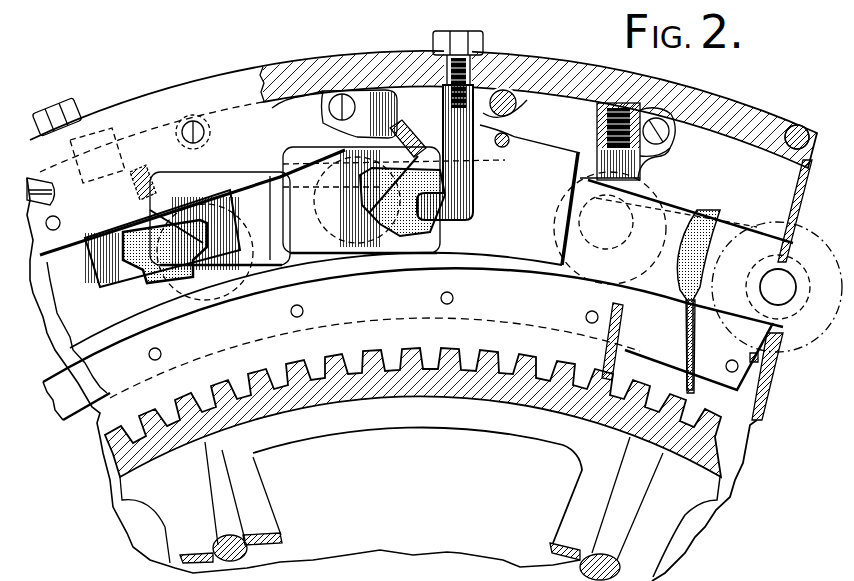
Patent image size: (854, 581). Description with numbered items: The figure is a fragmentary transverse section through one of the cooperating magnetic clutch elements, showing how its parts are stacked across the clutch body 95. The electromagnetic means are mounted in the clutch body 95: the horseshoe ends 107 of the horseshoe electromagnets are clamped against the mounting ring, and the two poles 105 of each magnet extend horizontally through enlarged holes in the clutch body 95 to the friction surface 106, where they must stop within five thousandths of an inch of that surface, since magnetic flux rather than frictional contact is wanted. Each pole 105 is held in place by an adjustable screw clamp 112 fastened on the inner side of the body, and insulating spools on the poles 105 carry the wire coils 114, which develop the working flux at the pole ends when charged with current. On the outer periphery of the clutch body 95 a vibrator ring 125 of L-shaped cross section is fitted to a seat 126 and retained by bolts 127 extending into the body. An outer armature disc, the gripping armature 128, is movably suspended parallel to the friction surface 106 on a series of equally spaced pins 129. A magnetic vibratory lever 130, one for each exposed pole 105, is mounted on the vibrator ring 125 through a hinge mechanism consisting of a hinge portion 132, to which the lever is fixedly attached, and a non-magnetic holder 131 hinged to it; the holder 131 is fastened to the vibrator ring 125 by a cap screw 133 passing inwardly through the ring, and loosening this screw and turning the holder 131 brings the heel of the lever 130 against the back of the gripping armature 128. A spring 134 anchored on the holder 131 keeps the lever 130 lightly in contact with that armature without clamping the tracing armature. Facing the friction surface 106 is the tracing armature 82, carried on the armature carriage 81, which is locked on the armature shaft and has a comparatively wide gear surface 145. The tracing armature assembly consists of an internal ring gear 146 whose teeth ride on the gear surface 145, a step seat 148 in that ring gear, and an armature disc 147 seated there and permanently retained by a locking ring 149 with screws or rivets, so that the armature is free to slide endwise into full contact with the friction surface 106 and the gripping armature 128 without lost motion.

The armature carriage 81 is at (428, 424).
The tracing armature 82 is at (481, 284).
The clutch body 95 is at (349, 568).
The poles 105 is at (656, 181).
The friction surface 106 is at (712, 258).
The horseshoe ends 107 is at (433, 298).
The adjustable screw clamp 112 is at (371, 92).
The wire coils 114 is at (690, 204).
The vibrator ring 125 is at (298, 64).
The seat 126 is at (810, 130).
The bolts 127 is at (522, 108).
The gripping armature 128 is at (563, 250).
The pins 129 is at (60, 222).
The vibratory lever 130 is at (182, 282).
The holder 131 is at (92, 256).
The hinge portion 132 is at (212, 232).
The cap screw 133 is at (462, 40).
The spring 134 is at (412, 125).
The gear surface 145 is at (723, 440).
The internal ring gear 146 is at (467, 360).
The armature disc 147 is at (692, 350).
The step seat 148 is at (683, 360).
The locking ring 149 is at (747, 373).